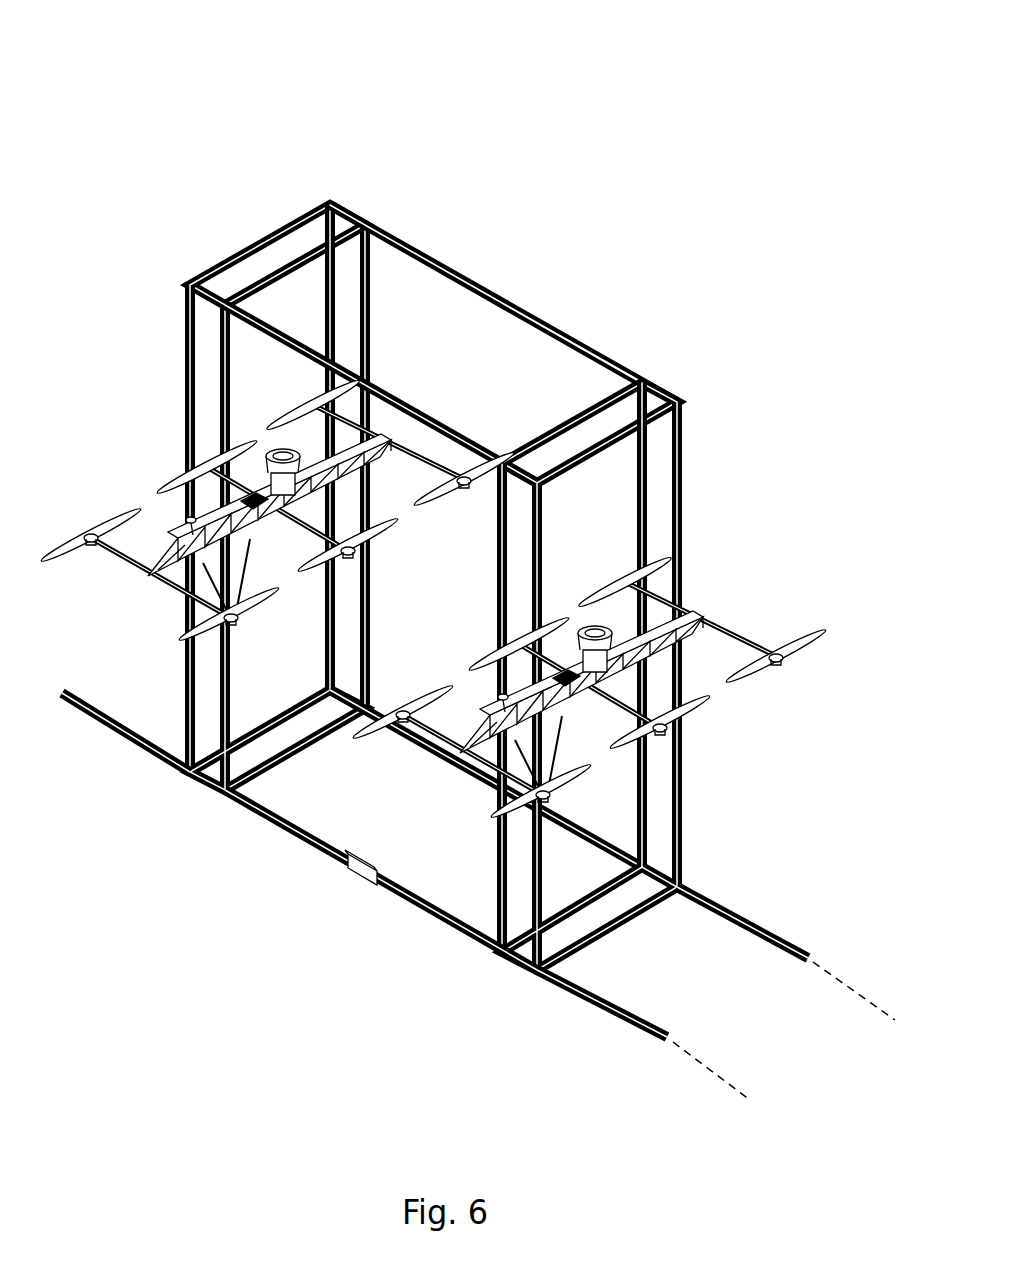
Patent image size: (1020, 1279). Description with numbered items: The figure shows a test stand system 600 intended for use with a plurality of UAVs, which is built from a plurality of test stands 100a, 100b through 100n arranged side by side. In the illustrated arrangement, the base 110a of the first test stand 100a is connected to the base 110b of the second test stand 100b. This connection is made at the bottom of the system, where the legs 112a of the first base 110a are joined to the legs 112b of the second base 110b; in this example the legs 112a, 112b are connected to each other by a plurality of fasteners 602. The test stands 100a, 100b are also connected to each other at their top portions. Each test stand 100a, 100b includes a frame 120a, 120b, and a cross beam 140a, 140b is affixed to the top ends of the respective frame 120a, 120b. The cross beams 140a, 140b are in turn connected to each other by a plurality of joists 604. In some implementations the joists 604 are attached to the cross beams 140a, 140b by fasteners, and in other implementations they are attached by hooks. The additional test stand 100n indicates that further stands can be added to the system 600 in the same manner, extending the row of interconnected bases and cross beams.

The test stand system 600 is at (467, 579).
The first test stand 100a is at (271, 537).
The second test stand 100b is at (579, 676).
The test stand 100n is at (704, 1138).
The base 110a is at (156, 833).
The base 110b is at (488, 1019).
The legs 112a is at (286, 832).
The legs 112b is at (437, 915).
The frame 120a is at (155, 422).
The frame 120b is at (726, 526).
The cross beam 140a is at (304, 268).
The cross beam 140b is at (594, 407).
The fasteners 602 is at (354, 875).
The joists 604 is at (484, 292).